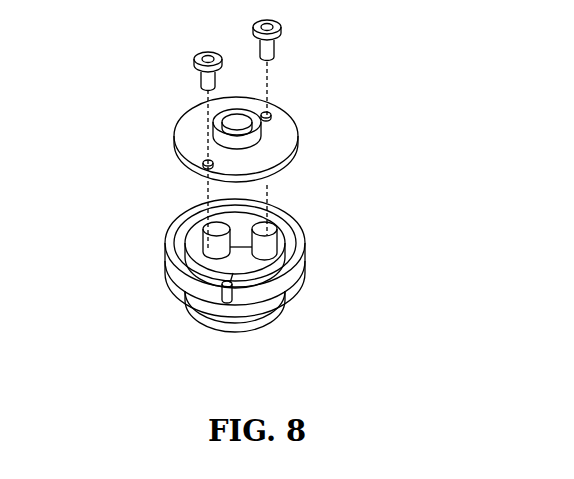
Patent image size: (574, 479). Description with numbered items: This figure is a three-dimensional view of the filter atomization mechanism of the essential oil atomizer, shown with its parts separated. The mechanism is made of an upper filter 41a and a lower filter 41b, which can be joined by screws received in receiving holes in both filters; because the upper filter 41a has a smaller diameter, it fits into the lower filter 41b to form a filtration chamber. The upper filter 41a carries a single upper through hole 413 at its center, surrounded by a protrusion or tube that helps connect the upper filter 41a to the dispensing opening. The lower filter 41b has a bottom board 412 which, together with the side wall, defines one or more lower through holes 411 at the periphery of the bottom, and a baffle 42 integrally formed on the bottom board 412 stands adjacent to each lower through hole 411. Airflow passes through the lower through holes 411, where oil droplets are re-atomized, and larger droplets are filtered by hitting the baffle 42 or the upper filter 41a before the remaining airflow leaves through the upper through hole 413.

The upper filter 41a is at (280, 139).
The upper through hole 413 is at (215, 127).
The lower through hole 411 is at (290, 305).
The baffle 42 is at (205, 248).
The lower filter 41b is at (270, 232).
The bottom board 412 is at (227, 292).